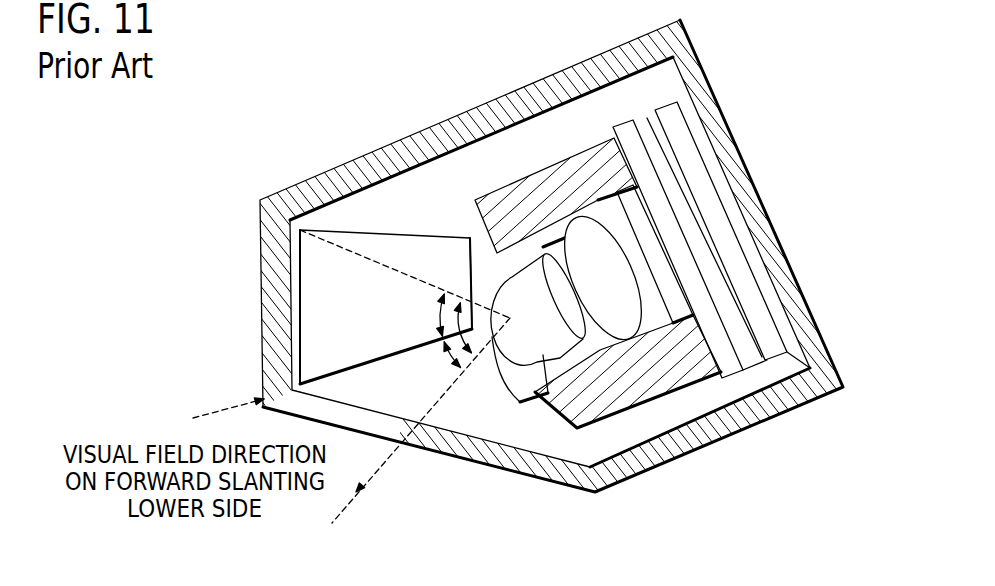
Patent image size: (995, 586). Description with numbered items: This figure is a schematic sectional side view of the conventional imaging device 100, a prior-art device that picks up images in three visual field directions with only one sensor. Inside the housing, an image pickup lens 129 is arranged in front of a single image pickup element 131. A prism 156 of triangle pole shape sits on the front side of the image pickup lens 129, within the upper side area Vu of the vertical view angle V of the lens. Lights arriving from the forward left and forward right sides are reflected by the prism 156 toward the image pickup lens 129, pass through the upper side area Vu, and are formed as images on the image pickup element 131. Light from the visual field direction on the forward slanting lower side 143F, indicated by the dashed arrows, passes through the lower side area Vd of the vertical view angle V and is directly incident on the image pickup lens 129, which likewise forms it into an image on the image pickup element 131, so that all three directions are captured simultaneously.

The imaging device 100 is at (252, 133).
The prism 156 is at (363, 226).
The visual field direction on the forward slanting lower side 143F is at (210, 412).
The image pickup lens 129 is at (545, 408).
The image pickup element 131 is at (707, 310).
The vertical view angle V is at (458, 300).
The upper side area of the vertical view angle Vu is at (440, 313).
The lower side area of the vertical view angle Vd is at (450, 358).